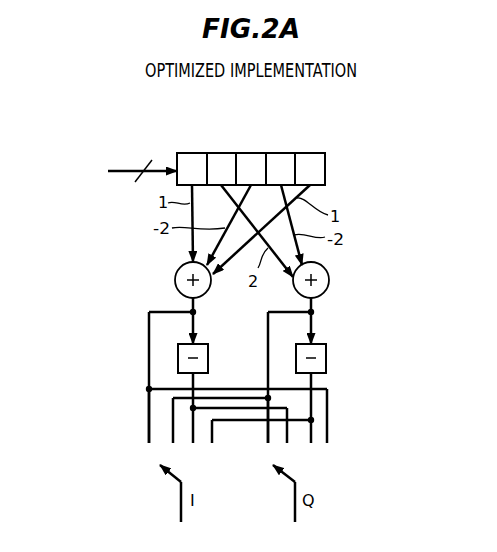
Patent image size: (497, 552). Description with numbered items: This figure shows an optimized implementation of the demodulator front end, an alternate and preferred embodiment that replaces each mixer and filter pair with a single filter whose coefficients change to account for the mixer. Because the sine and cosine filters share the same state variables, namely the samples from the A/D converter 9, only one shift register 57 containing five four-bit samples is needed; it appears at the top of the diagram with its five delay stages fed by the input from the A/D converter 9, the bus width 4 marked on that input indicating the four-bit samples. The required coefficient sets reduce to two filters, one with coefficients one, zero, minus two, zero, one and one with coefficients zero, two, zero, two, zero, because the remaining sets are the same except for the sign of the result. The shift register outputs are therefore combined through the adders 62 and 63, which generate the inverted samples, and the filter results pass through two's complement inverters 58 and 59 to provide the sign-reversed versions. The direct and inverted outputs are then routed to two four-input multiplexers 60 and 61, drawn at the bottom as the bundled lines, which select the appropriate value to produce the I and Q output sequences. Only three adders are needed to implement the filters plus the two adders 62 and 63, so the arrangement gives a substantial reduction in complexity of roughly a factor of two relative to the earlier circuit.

The bus width indicator (4-bit input) 4 is at (142, 160).
The A/D converter 9 is at (82, 170).
The shift register 57 is at (325, 162).
The inverter 58 is at (208, 360).
The inverter 59 is at (327, 360).
The four input MUX 60 is at (140, 423).
The four input MUX 61 is at (330, 428).
The adder 62 is at (175, 272).
The adder 63 is at (329, 273).